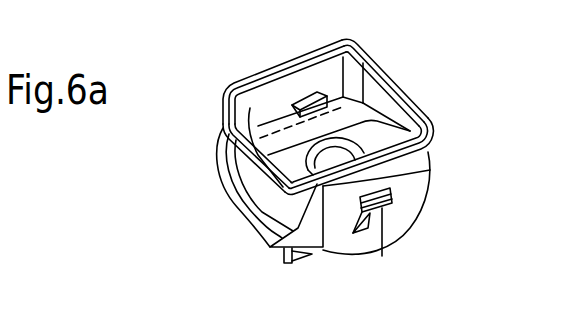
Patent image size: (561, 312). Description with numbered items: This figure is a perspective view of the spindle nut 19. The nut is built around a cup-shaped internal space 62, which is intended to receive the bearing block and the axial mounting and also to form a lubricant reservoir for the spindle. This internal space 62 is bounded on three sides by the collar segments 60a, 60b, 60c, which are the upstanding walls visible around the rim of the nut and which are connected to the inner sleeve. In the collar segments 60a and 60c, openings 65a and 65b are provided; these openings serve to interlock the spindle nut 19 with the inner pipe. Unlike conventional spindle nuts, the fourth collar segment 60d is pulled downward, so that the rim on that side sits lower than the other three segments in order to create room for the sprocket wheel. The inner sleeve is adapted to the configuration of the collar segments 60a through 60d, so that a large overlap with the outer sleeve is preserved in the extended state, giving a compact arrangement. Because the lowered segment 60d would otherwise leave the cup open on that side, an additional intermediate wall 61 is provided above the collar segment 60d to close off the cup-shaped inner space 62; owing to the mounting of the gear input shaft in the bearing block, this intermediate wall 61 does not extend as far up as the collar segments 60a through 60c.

The spindle nut 19 is at (402, 46).
The collar segment 60a is at (275, 64).
The collar segment 60b is at (397, 71).
The collar segment 60c is at (400, 160).
The collar segment 60d is at (224, 168).
The intermediate wall 61 is at (235, 142).
The cup-shaped internal space 62 is at (410, 113).
The opening 65a is at (306, 99).
The opening 65b is at (390, 210).